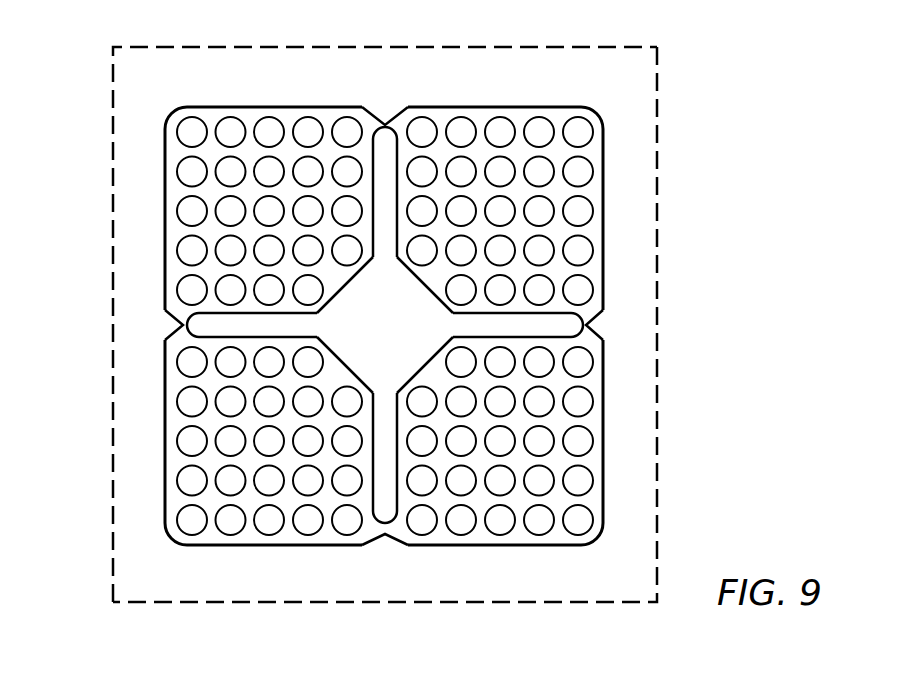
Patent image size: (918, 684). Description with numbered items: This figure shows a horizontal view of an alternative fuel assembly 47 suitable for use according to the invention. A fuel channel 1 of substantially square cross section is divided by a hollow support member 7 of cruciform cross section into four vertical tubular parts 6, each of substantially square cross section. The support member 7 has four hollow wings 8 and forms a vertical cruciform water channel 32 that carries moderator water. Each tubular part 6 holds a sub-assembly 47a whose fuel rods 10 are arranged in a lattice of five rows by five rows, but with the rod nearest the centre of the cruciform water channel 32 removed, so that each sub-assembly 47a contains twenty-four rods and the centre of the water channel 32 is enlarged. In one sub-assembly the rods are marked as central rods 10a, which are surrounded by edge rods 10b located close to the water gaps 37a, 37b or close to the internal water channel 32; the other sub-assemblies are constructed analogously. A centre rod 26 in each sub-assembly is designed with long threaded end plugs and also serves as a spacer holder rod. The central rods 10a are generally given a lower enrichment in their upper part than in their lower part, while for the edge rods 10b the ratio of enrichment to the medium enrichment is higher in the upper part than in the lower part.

The fuel channel 1 is at (712, 190).
The tubular part 6 is at (255, 105).
The support member 7 is at (347, 288).
The hollow wing 8 is at (382, 140).
The fuel rod 10 is at (587, 172).
The central rod 10a is at (270, 211).
The edge rod 10b is at (269, 211).
The centre rod 26 is at (280, 206).
The cruciform water channel 32 is at (390, 327).
The water gap 37a is at (443, 70).
The water gap 37b is at (630, 413).
The fuel assembly 47 is at (628, 288).
The sub-assembly 47a is at (207, 230).